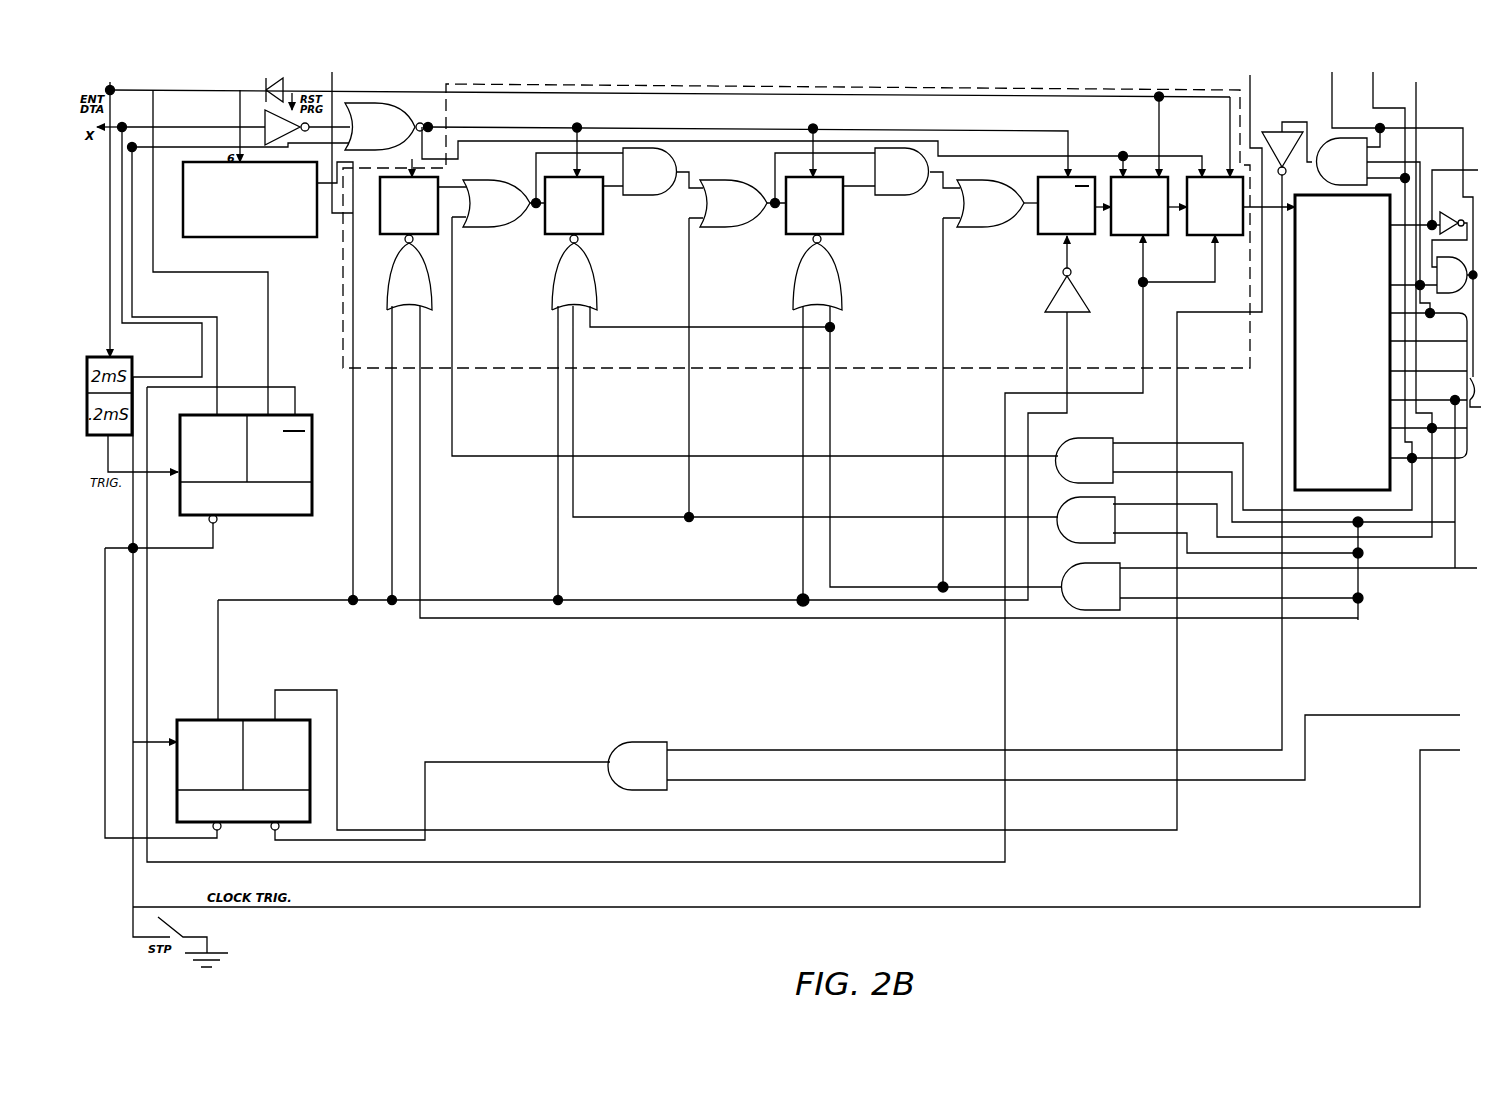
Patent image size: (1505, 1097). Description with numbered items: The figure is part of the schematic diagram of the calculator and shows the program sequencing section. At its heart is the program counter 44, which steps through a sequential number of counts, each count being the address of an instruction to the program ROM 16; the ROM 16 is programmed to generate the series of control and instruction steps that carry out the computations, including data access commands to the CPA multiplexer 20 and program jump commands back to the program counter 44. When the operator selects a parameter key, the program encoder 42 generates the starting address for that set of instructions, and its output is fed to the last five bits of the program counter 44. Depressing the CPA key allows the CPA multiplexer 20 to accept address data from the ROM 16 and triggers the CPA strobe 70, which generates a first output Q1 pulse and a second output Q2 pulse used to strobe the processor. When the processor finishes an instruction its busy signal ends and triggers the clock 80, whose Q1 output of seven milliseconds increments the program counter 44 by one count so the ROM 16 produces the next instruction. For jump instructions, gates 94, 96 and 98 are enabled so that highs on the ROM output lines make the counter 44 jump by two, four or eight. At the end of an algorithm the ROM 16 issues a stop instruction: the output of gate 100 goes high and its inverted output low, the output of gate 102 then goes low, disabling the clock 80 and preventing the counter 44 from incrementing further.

The program ROM 16 is at (1295, 378).
The CPA multiplexer 20 is at (1197, 237).
The program encoder 42 is at (292, 238).
The program counter 44 is at (698, 356).
The CPA strobe 70 is at (302, 417).
The clock 80 is at (206, 722).
The gate 94 is at (1090, 440).
The gate 96 is at (1074, 500).
The gate 98 is at (1076, 565).
The gate 100 is at (1326, 137).
The gate 102 is at (655, 748).